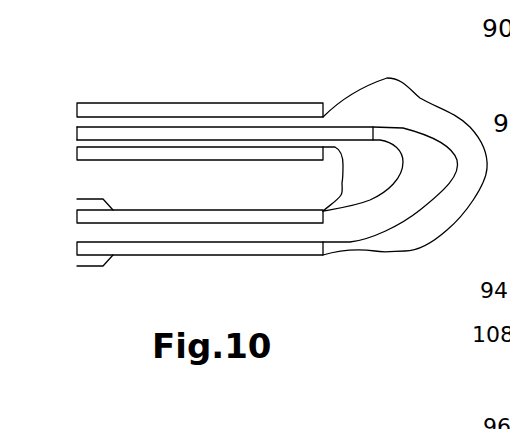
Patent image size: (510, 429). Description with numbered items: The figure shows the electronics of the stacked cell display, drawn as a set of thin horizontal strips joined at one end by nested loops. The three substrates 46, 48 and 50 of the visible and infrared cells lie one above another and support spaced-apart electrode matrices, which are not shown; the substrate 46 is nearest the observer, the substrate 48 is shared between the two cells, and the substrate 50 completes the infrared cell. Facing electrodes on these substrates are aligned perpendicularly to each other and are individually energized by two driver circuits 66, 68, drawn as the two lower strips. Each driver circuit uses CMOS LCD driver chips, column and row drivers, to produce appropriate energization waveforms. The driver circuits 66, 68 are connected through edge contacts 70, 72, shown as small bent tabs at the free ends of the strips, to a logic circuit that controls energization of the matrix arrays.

The substrate 46 is at (112, 111).
The substrate 48 is at (140, 155).
The substrate 50 is at (225, 132).
The driver circuit 66 is at (210, 218).
The driver circuit 68 is at (212, 250).
The edge contact 70 is at (82, 193).
The edge contact 72 is at (82, 272).